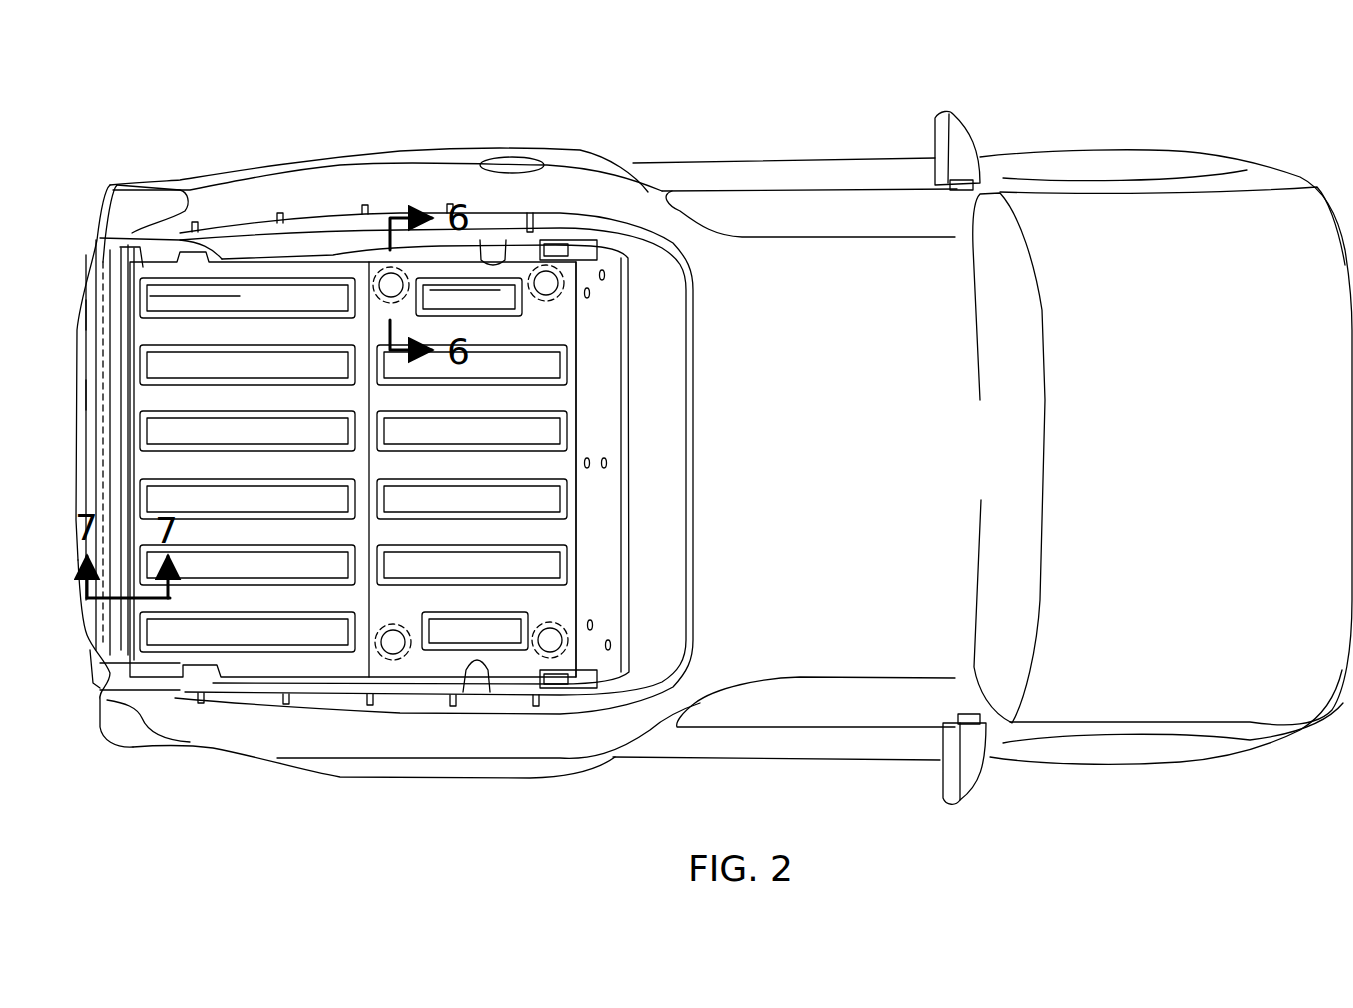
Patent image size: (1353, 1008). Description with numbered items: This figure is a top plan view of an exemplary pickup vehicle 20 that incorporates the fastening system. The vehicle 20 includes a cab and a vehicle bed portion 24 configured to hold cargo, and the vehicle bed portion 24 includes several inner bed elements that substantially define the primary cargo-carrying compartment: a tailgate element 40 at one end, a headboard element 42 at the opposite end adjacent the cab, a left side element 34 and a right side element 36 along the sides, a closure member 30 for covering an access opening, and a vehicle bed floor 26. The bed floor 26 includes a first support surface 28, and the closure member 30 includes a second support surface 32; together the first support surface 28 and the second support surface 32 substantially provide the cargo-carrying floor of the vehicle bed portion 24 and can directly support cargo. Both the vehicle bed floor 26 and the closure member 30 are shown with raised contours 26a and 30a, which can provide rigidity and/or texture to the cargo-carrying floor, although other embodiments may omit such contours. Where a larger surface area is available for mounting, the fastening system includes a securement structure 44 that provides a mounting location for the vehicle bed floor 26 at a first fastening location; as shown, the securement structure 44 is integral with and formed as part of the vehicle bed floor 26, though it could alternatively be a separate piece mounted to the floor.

The vehicle 20 is at (1036, 120).
The vehicle bed portion 24 is at (515, 120).
The vehicle bed floor 26 is at (545, 528).
The raised contours 26a is at (493, 293).
The first support surface 28 is at (486, 478).
The closure member 30 is at (137, 612).
The raised contours 30a is at (242, 297).
The second support surface 32 is at (250, 478).
The left side element 34 is at (500, 262).
The right side element 36 is at (467, 692).
The tailgate element 40 is at (118, 345).
The headboard element 42 is at (598, 594).
The securement structure 44 is at (372, 267).